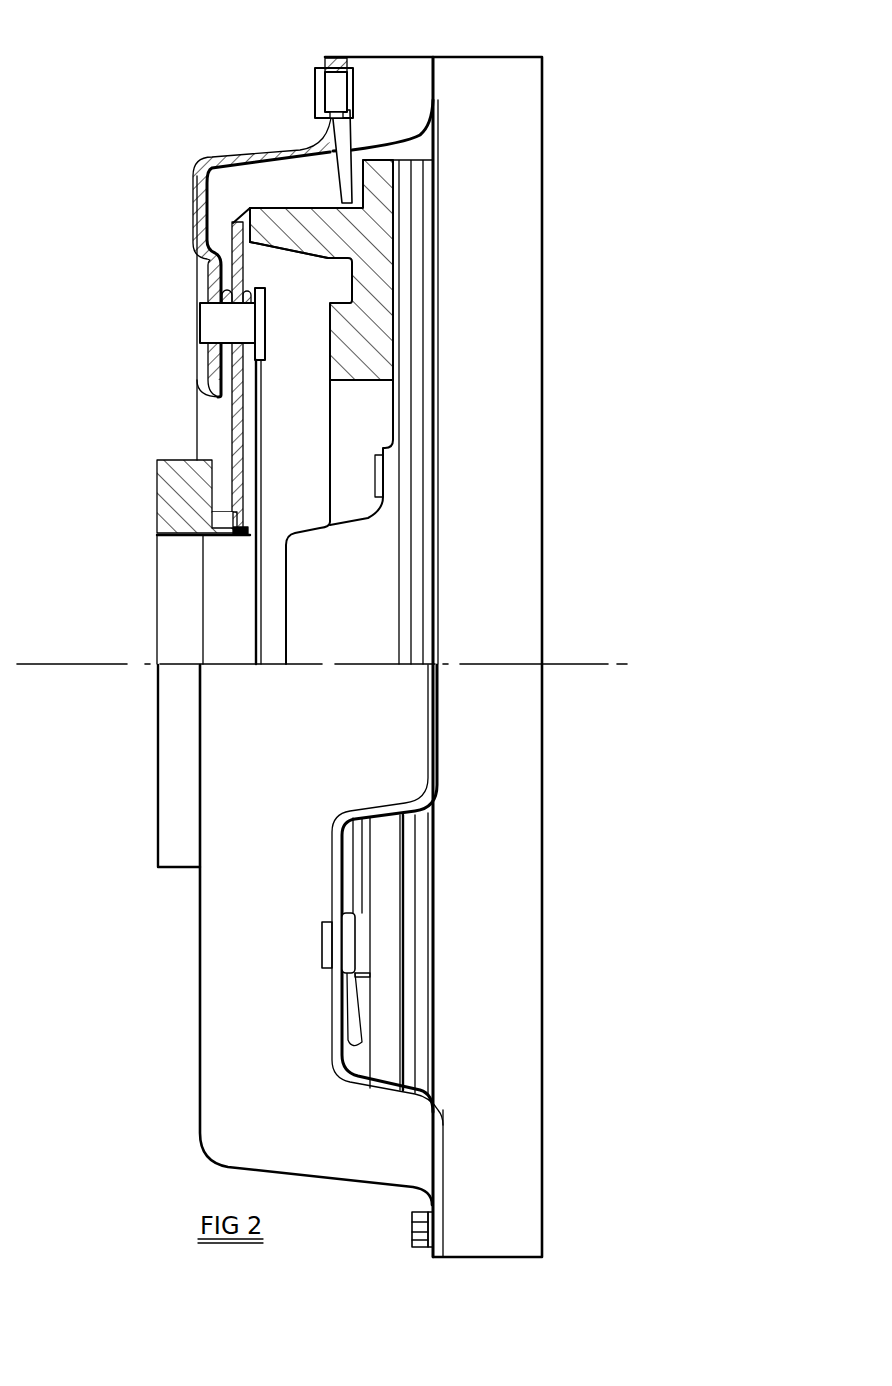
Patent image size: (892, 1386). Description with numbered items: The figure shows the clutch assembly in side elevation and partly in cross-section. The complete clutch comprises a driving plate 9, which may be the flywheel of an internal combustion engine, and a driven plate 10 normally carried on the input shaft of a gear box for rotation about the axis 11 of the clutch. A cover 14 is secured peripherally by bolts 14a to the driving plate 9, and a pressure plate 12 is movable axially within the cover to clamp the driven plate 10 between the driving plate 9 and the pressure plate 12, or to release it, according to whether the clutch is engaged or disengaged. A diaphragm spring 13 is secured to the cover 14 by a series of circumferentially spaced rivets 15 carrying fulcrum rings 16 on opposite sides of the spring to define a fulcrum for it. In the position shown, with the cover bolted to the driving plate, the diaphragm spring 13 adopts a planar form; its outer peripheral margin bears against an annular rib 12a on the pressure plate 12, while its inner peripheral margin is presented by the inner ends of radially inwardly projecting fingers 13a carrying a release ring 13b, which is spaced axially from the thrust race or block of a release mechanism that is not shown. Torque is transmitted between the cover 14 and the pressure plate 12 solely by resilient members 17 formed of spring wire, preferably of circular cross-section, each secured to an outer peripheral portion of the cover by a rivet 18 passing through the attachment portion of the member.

The flywheel 9 is at (538, 1226).
The driven plate 10 is at (420, 262).
The axis 11 is at (570, 662).
The pressure plate 12 is at (380, 210).
The annular rib 12a is at (280, 222).
The diaphragm spring 13 is at (222, 260).
The fingers 13a is at (178, 536).
The release ring 13b is at (237, 492).
The cover 14 is at (193, 165).
The bolts 14a is at (411, 1225).
The rivets 15 is at (235, 328).
The fulcrum rings 16 is at (230, 298).
The resilient members 17 is at (358, 130).
The rivet 18 is at (320, 90).